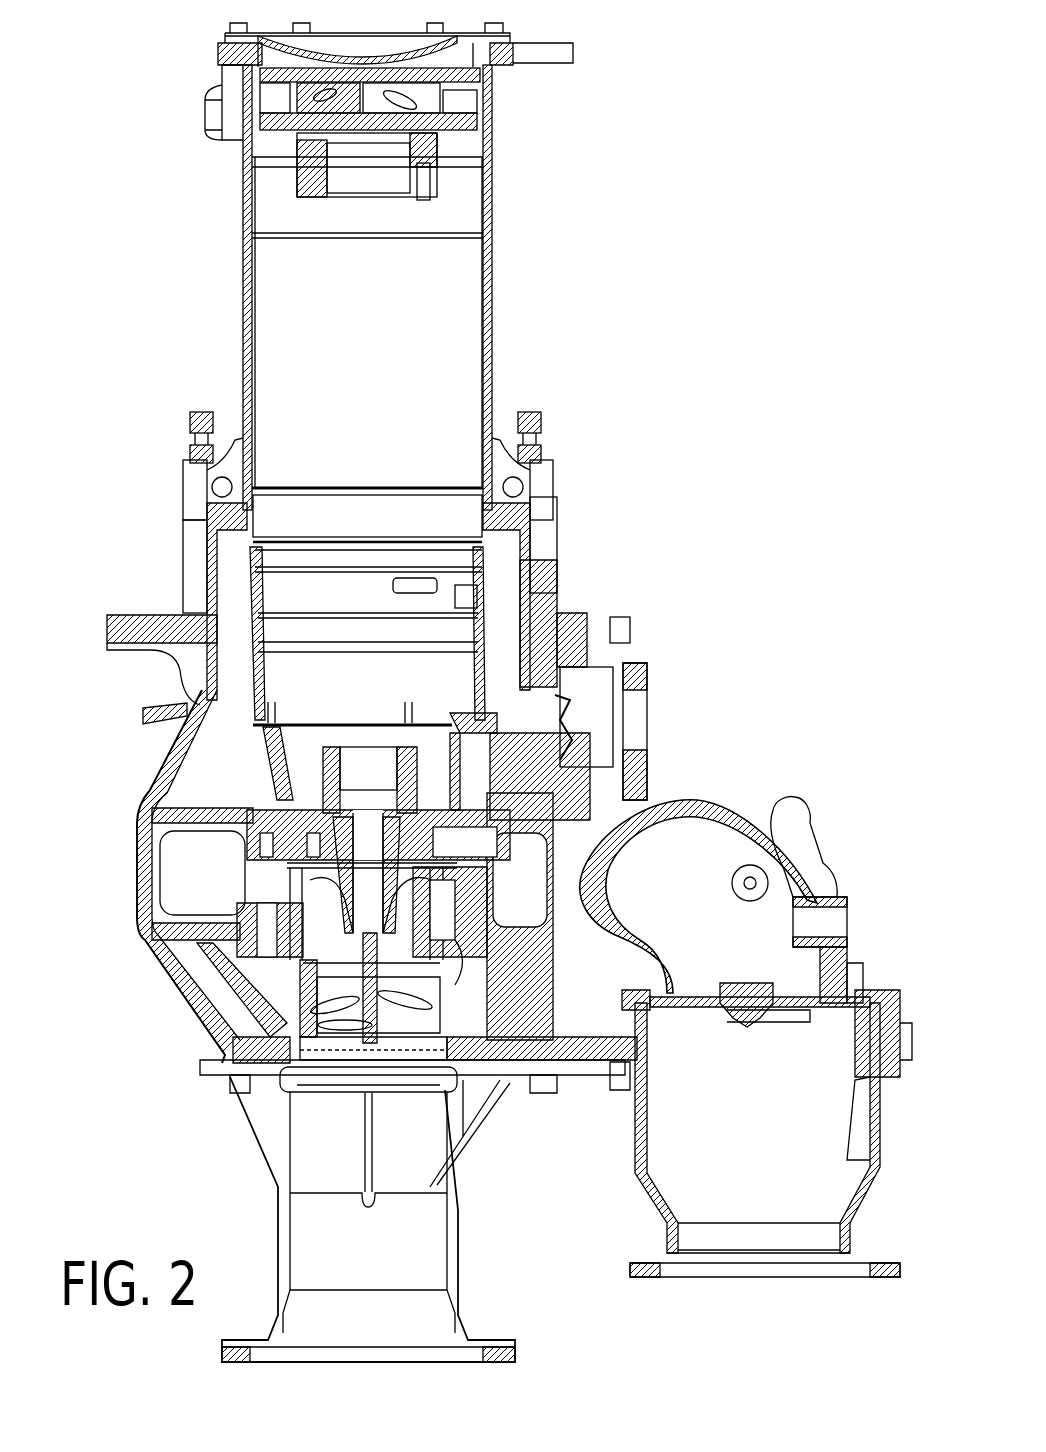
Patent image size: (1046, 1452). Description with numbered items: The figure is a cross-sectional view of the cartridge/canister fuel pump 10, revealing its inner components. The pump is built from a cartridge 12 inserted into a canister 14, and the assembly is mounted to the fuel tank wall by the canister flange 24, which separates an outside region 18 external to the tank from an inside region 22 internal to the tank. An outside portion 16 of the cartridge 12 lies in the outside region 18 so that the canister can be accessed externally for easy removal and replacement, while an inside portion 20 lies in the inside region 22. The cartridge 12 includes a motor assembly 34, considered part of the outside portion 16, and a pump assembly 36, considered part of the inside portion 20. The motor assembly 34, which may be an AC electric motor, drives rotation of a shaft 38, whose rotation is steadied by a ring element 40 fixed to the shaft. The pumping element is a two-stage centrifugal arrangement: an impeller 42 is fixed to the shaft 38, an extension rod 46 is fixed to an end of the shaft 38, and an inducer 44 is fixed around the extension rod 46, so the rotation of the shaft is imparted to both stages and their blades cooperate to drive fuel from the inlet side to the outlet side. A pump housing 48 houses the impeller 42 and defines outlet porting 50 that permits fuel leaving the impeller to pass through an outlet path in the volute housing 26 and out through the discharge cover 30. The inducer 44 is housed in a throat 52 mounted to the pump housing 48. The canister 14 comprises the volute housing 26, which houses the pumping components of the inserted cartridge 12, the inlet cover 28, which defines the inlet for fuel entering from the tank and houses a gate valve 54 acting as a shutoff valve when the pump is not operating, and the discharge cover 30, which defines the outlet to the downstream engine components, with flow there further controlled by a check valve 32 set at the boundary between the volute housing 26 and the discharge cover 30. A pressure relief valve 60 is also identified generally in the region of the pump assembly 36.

The cartridge/canister fuel pump 10 is at (770, 322).
The cartridge 12 is at (205, 325).
The canister 14 is at (165, 1075).
The outside portion 16 is at (540, 282).
The outside region 18 is at (98, 459).
The inside portion 20 is at (553, 1192).
The inside region 22 is at (73, 821).
The canister flange 24 is at (140, 620).
The volute housing 26 is at (583, 800).
The inlet cover 28 is at (262, 1165).
The discharge cover 30 is at (880, 1165).
The check valve 32 is at (787, 985).
The motor assembly 34 is at (492, 236).
The pump assembly 36 is at (242, 775).
The shaft 38 is at (335, 795).
The ring element 40 is at (268, 835).
The impeller 42 is at (330, 905).
The inducer 44 is at (292, 1040).
The extension rod 46 is at (317, 1000).
The pump housing 48 is at (330, 855).
The outlet porting 50 is at (467, 880).
The throat 52 is at (473, 1005).
The gate valve 54 is at (433, 1187).
The pressure relief valve 60 is at (490, 965).